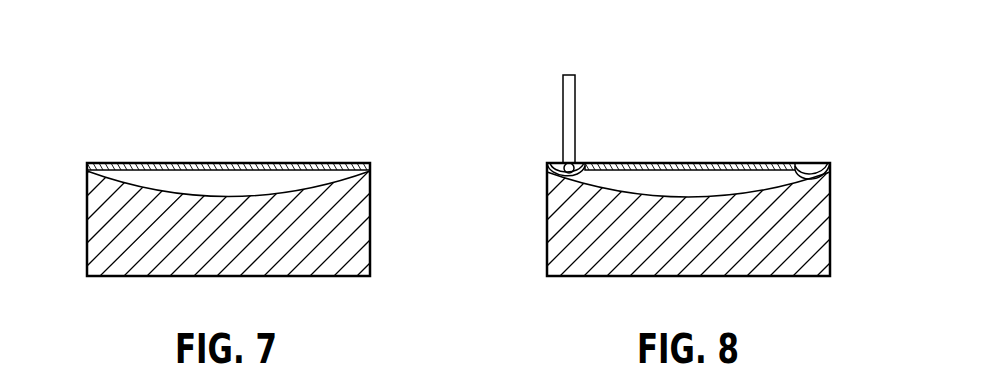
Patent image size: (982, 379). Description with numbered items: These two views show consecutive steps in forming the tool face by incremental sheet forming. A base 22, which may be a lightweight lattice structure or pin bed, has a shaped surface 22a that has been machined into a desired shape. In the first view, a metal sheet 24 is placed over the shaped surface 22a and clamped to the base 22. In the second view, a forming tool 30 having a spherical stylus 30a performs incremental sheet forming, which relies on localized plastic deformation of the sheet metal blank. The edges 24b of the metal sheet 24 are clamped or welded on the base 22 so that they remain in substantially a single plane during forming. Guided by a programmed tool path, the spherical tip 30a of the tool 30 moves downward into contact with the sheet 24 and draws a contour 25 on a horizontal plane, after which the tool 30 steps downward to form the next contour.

In FIG. 7, the base 22 is at (122, 228).
In FIG. 8, the base 22 is at (795, 236).
In FIG. 7, the shaped surface 22a is at (192, 189).
In FIG. 8, the shaped surface 22a is at (705, 191).
In FIG. 7, the metal sheet 24 is at (254, 163).
In FIG. 8, the metal sheet 24 is at (668, 163).
In FIG. 8, the edges 24b is at (546, 157).
In FIG. 8, the contour 25 is at (584, 155).
In FIG. 8, the forming tool 30 is at (567, 96).
In FIG. 8, the spherical stylus 30a is at (567, 178).